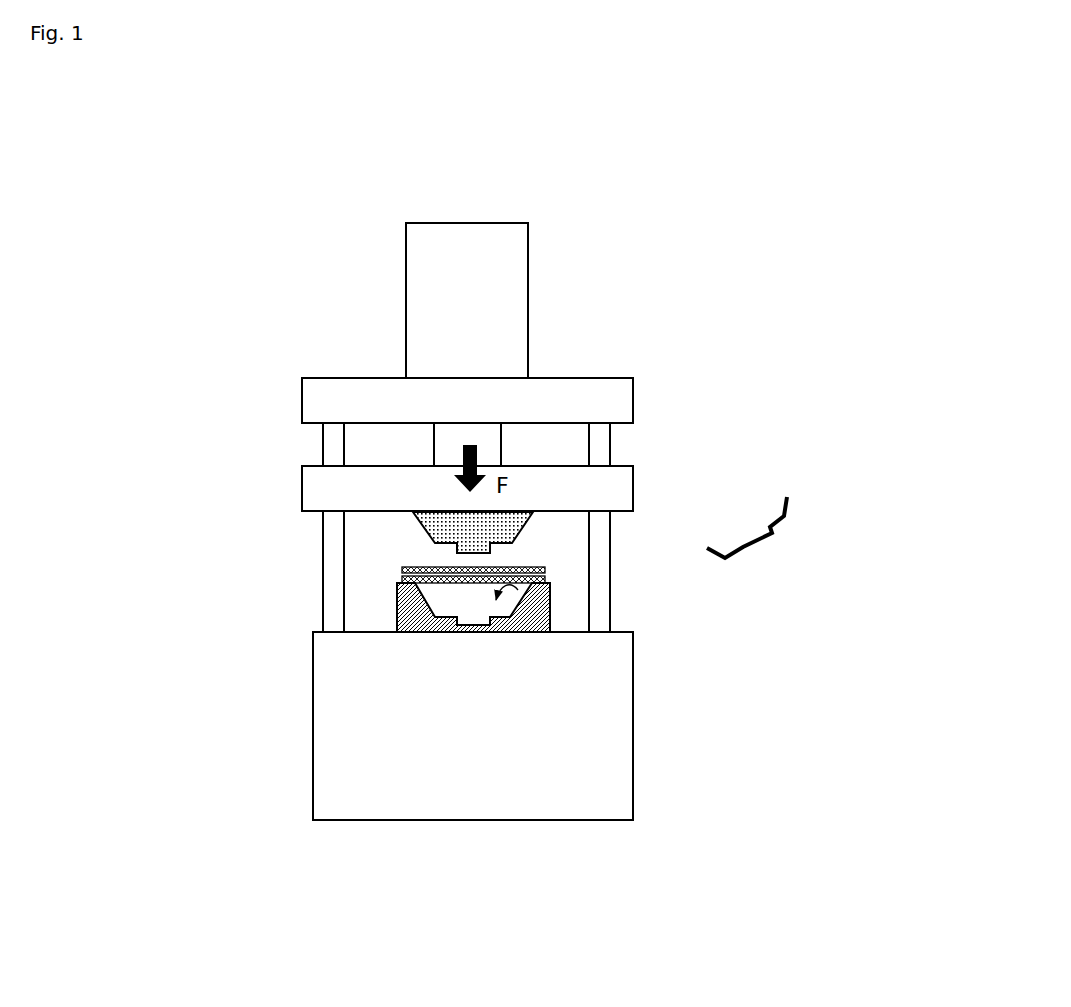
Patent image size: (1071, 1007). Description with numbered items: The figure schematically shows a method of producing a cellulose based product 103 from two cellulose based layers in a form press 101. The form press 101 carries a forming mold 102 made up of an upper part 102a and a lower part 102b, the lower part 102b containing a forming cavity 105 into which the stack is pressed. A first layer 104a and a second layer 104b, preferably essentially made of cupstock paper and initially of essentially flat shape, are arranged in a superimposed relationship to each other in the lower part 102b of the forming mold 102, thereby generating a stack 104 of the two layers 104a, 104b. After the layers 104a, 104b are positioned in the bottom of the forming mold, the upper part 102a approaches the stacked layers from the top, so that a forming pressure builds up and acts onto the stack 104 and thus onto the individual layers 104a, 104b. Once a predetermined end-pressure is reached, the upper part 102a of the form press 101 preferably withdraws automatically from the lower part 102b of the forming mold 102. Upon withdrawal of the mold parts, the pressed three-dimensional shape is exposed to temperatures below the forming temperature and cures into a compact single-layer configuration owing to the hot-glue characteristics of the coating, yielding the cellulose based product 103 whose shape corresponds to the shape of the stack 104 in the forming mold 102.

The form press 101 is at (528, 257).
The forming mold 102 is at (615, 510).
The upper part of the forming mold 102a is at (520, 511).
The lower part of the forming mold 102b is at (547, 608).
The cellulose based product 103 is at (790, 510).
The stack 104 is at (333, 558).
The first layer 104a is at (400, 568).
The second layer 104b is at (400, 580).
The forming cavity 105 is at (535, 632).